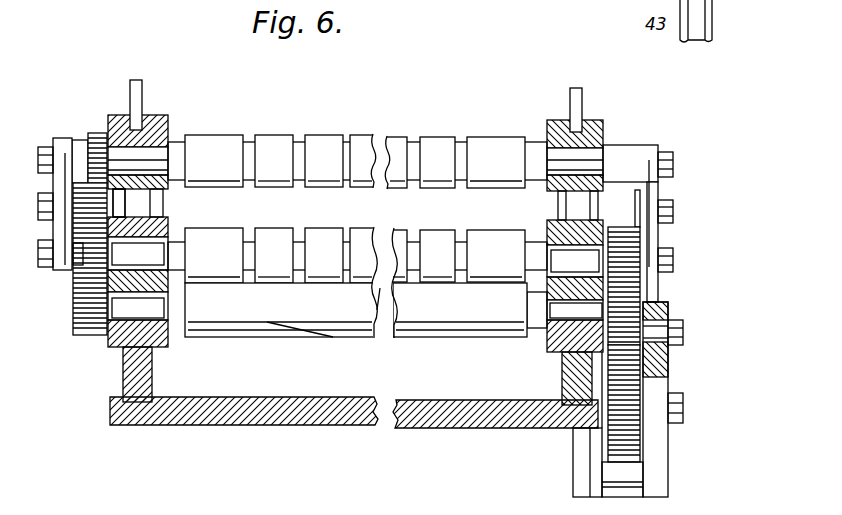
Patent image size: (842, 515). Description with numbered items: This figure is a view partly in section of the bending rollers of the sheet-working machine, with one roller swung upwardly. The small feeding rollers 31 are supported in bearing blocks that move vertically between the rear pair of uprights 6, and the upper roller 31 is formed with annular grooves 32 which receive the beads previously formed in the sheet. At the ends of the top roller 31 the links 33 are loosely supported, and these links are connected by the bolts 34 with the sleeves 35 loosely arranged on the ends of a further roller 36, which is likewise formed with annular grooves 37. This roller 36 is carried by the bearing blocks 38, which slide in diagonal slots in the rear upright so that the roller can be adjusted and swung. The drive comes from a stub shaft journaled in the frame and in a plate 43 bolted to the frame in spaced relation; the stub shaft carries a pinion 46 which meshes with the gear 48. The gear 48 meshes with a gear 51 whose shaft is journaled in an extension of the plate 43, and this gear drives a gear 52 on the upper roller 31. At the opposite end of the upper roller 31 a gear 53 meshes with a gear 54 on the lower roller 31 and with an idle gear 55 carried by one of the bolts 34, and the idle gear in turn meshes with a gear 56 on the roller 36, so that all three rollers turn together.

The upright 6 is at (143, 370).
The small feeding roller 31 is at (483, 293).
The annular groove 32 is at (411, 236).
The link 33 is at (648, 243).
The bolt 34 is at (673, 204).
The sleeve 35 is at (633, 155).
The roller 36 is at (434, 143).
The annular groove 37 is at (462, 140).
The bearing block 38 is at (597, 122).
The plate 43 is at (660, 481).
The pinion 46 is at (656, 21).
The gear 48 is at (630, 443).
The gear 51 is at (640, 300).
The gear 52 is at (673, 262).
The gear 53 is at (82, 258).
The gear 54 is at (92, 328).
The idle gear 55 is at (97, 204).
The gear 56 is at (93, 133).